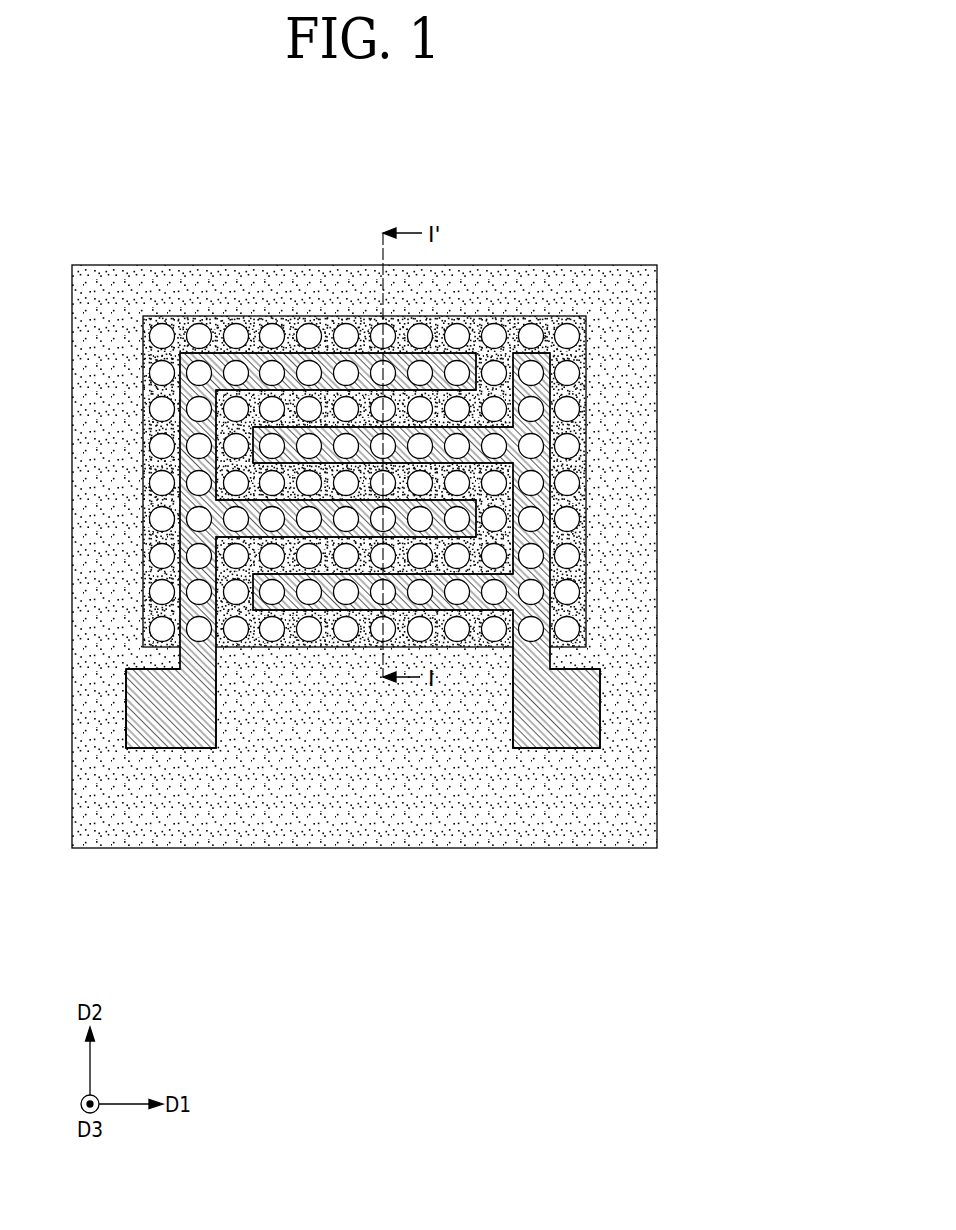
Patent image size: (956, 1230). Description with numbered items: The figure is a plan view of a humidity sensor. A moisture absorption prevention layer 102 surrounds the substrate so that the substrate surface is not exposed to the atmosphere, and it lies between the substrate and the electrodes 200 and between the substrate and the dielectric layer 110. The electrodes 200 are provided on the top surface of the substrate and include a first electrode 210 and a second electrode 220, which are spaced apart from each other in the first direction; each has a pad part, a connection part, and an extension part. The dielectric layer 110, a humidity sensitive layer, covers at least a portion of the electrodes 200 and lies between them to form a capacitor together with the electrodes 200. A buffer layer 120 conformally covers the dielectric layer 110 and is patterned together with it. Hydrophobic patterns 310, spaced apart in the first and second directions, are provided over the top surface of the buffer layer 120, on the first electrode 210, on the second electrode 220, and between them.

The moisture absorption prevention layer 102 is at (638, 583).
The dielectric layer 110 is at (578, 465).
The buffer layer 120 is at (525, 550).
The electrodes 200 is at (363, 815).
The first electrode 210 is at (172, 740).
The second electrode 220 is at (556, 793).
The hydrophobic patterns 310 is at (567, 372).